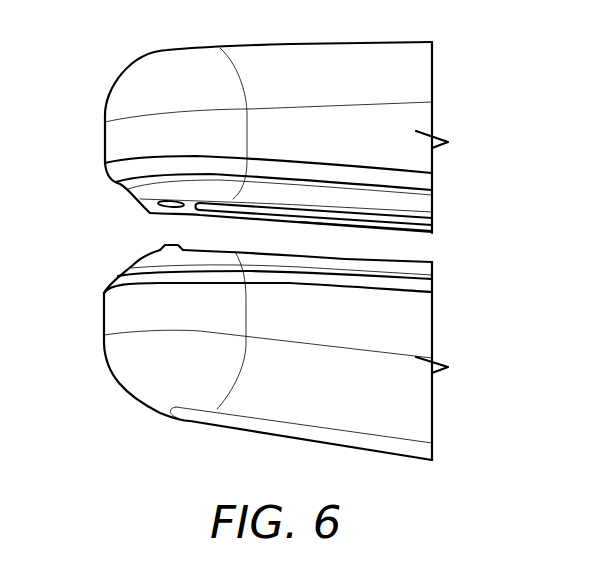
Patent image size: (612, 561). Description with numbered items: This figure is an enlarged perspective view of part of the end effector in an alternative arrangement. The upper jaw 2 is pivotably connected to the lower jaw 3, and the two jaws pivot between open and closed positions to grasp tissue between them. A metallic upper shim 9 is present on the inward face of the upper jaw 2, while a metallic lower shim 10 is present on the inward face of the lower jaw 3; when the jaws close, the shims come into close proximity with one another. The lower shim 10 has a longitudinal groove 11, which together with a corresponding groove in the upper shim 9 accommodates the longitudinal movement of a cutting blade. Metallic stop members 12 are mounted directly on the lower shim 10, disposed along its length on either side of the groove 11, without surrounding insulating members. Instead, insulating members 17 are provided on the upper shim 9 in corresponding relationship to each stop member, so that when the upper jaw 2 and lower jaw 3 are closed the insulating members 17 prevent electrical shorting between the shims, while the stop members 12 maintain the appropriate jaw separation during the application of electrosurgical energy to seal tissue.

The upper jaw 2 is at (281, 52).
The lower jaw 3 is at (278, 405).
The upper shim 9 is at (297, 218).
The lower shim 10 is at (345, 262).
The groove 11 is at (373, 218).
The metallic stop members 12 is at (176, 251).
The insulating members 17 is at (163, 205).